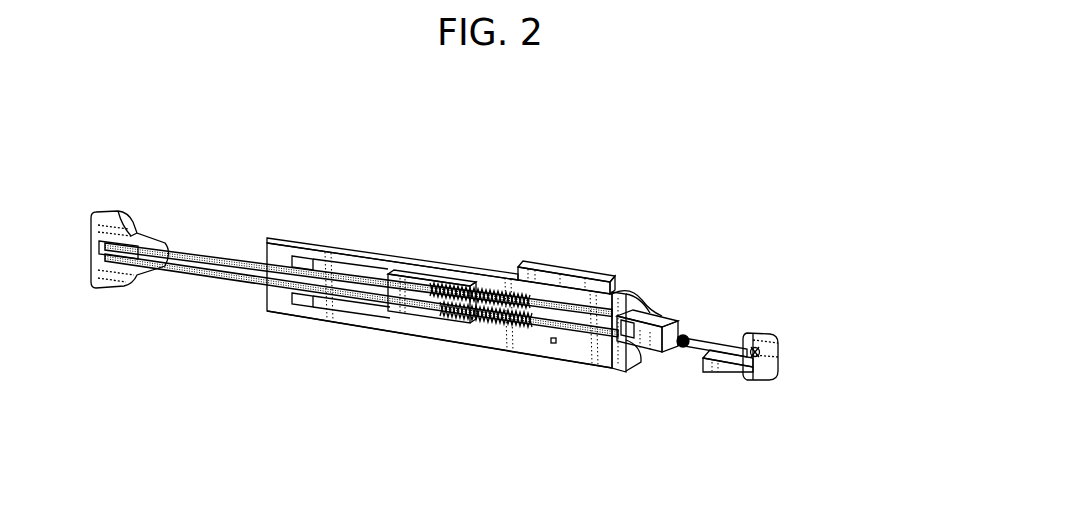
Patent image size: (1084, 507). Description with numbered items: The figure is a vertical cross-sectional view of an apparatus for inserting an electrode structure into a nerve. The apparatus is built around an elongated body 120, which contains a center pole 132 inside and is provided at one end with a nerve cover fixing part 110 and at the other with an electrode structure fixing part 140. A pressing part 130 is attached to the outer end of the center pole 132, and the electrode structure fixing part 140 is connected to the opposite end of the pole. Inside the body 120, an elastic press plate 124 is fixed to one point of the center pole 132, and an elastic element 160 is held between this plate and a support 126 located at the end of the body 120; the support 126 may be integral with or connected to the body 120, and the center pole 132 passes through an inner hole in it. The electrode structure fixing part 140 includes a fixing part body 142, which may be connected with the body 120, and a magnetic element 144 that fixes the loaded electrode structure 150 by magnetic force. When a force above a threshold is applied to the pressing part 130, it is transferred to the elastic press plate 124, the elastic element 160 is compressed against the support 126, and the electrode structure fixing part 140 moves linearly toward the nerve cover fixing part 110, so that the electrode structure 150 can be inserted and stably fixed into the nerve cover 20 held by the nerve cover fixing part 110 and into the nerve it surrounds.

The nerve cover 20 is at (749, 381).
The nerve cover fixing part 110 is at (778, 358).
The body 120 is at (386, 238).
The elastic press plate 124 is at (392, 320).
The support 126 is at (566, 349).
The pressing part 130 is at (110, 212).
The center pole 132 is at (206, 262).
The electrode structure fixing part 140 is at (638, 300).
The fixing part body 142 is at (658, 300).
The magnetic element 144 is at (614, 356).
The electrode structure 150 is at (667, 352).
The elastic element 160 is at (482, 336).